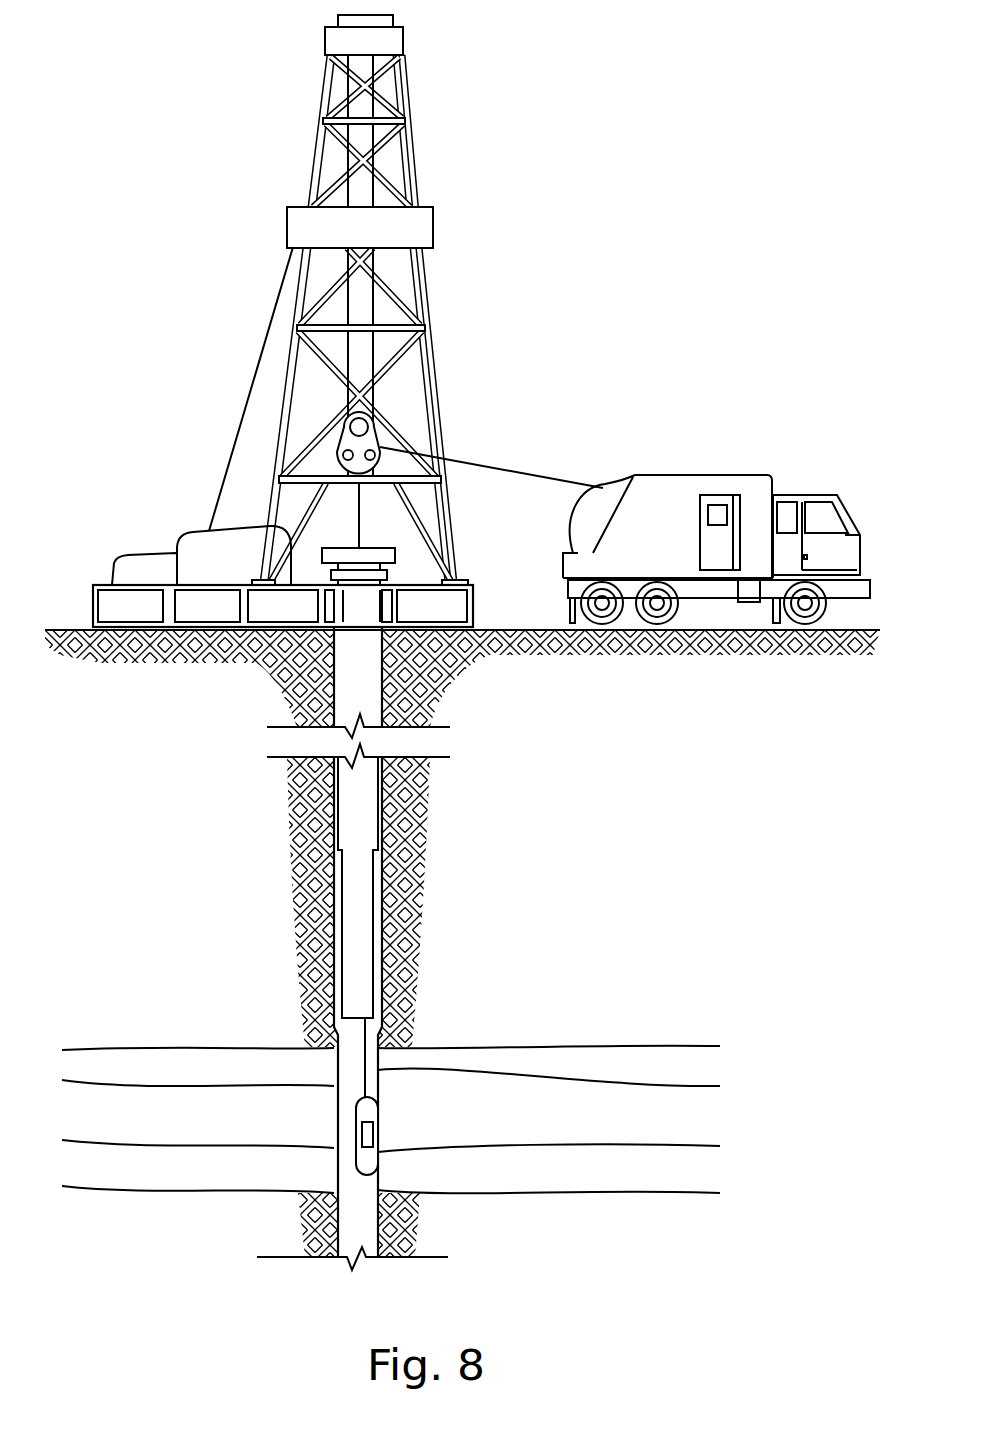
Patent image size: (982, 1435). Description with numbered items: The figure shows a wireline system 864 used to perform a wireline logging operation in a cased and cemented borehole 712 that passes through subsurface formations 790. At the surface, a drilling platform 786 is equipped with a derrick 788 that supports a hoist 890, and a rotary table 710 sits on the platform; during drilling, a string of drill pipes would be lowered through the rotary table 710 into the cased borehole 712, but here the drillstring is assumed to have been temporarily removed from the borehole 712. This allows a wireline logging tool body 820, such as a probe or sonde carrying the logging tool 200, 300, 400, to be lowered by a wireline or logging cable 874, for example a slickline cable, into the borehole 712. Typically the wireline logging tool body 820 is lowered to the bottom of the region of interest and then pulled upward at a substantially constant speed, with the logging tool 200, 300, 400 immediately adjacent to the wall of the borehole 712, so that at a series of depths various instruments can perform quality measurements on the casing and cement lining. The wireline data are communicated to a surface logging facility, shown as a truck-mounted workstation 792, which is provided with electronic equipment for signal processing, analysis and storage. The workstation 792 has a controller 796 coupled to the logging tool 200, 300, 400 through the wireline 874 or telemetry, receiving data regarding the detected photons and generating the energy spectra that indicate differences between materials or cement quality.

The wireline system 864 is at (462, 642).
The hoist 890 is at (373, 423).
The wireline 874 is at (490, 470).
The controller 796 is at (718, 498).
The workstation 792 is at (716, 526).
The rotary table 710 is at (395, 548).
The derrick 788 is at (458, 577).
The drilling platform 786 is at (473, 620).
The borehole 712 is at (334, 1117).
The wireline logging tool body 820 is at (475, 1134).
The logging tool 200 is at (478, 1137).
The logging tool 300 is at (478, 1137).
The logging tool 400 is at (372, 1133).
The subsurface formations 790 is at (722, 1040).